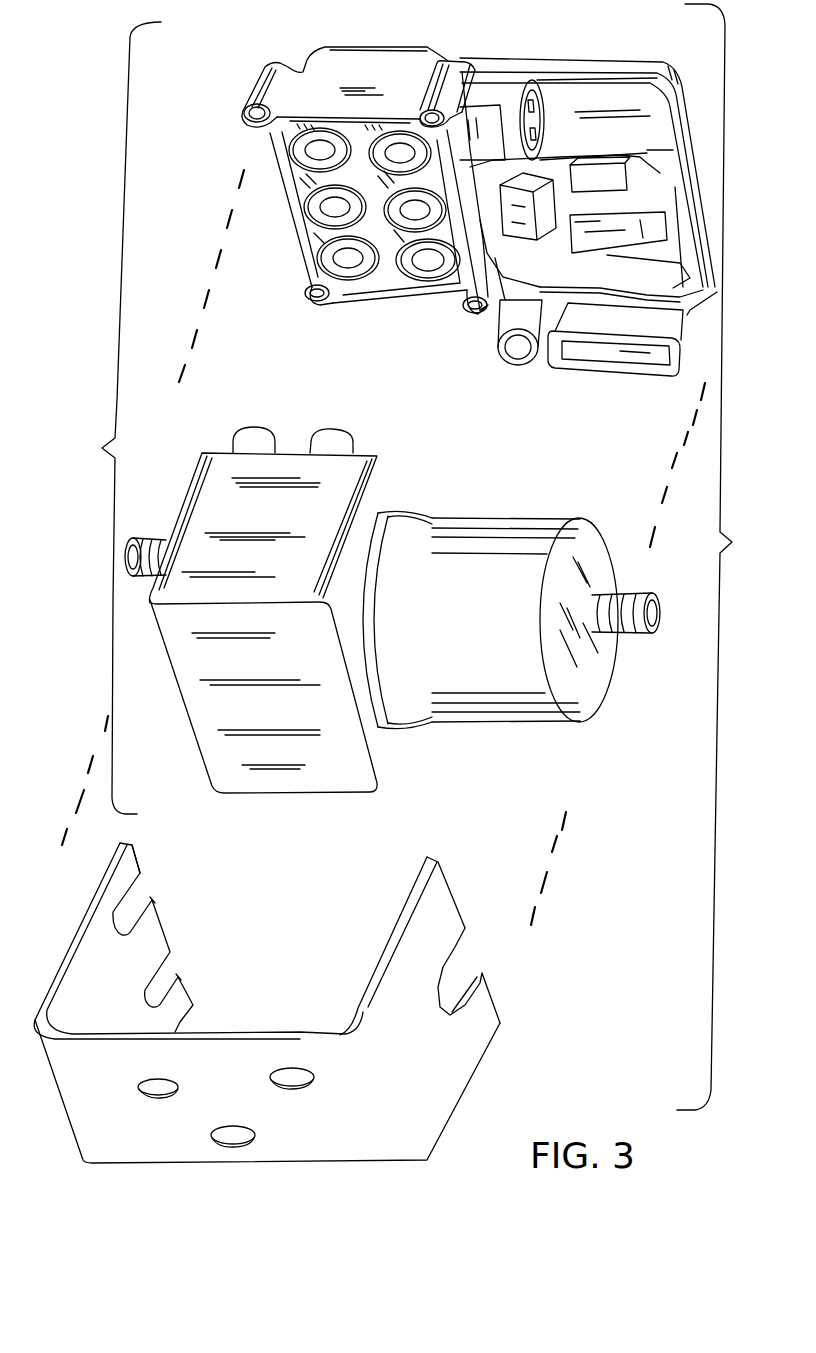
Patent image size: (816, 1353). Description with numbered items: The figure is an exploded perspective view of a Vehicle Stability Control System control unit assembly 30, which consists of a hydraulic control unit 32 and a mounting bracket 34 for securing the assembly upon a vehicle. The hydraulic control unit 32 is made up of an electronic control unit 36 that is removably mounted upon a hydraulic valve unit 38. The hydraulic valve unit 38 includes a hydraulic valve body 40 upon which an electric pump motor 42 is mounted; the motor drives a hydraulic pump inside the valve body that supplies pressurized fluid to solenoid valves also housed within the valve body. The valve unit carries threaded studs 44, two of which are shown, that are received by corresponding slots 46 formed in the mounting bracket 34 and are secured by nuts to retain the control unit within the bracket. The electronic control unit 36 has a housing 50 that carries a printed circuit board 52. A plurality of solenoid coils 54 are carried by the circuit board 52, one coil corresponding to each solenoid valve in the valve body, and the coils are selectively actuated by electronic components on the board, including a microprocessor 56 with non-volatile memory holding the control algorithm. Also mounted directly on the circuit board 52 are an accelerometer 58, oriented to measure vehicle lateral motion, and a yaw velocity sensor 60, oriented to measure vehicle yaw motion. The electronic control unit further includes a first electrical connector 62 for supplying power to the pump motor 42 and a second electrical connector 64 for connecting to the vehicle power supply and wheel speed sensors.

The Vehicle Stability Control System Control Unit assembly 30 is at (725, 557).
The hydraulic control unit 32 is at (108, 418).
The mounting bracket 34 is at (456, 893).
The electronic control unit 36 is at (236, 87).
The hydraulic valve unit 38 is at (460, 470).
The hydraulic valve body 40 is at (380, 753).
The electric pump motor 42 is at (510, 700).
The threaded studs 44 is at (627, 597).
The slots 46 is at (186, 942).
The housing 50 is at (385, 60).
The printed circuit board 52 is at (602, 357).
The solenoid coils 54 is at (362, 277).
The microprocessor 56 is at (512, 255).
The accelerometer 58 is at (597, 255).
The yaw velocity sensor 60 is at (610, 173).
The first electrical connector 62 is at (513, 363).
The second electrical connector 64 is at (537, 130).